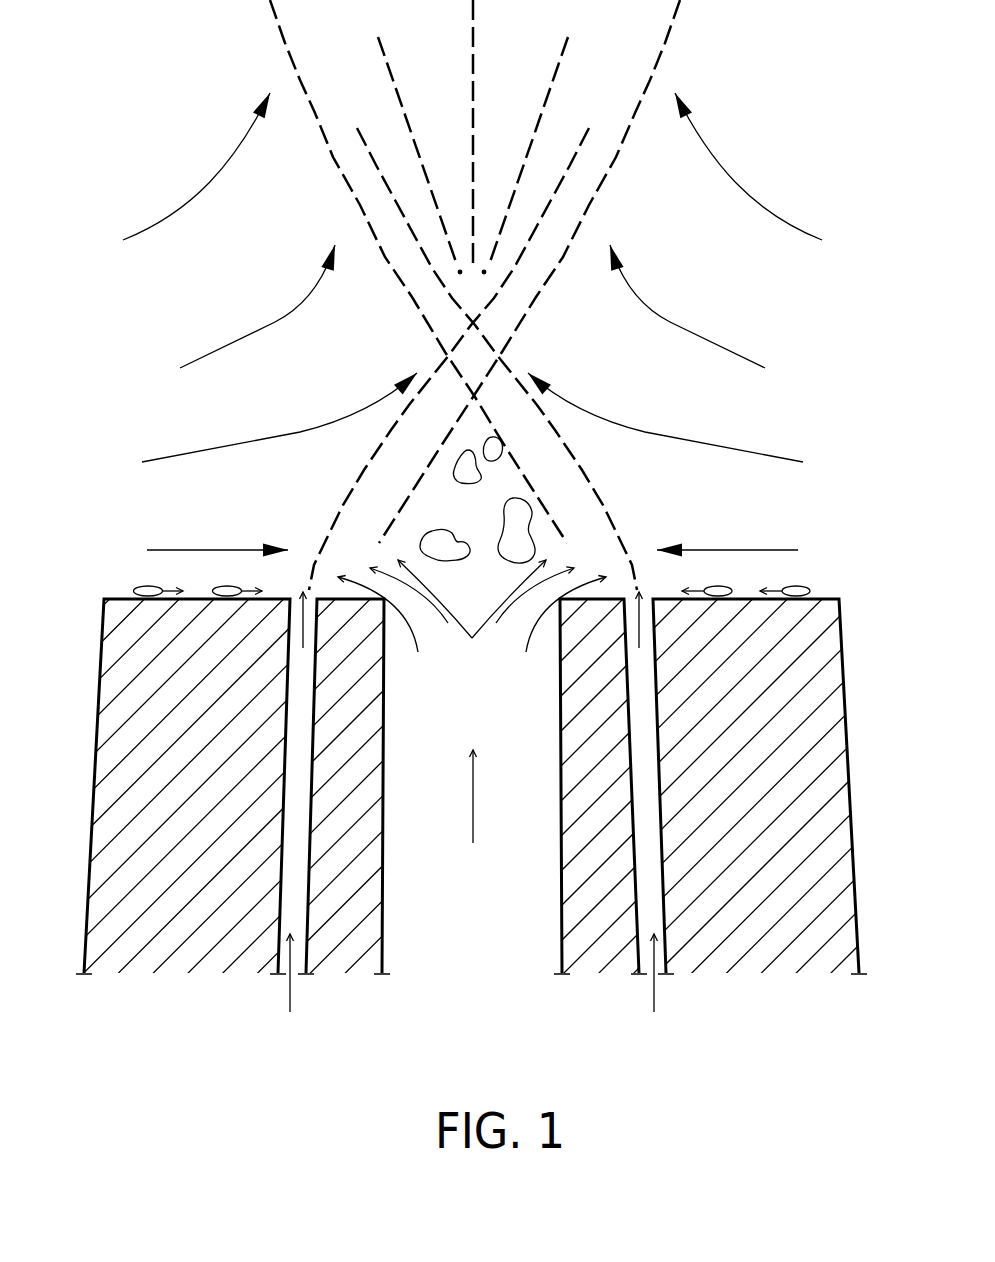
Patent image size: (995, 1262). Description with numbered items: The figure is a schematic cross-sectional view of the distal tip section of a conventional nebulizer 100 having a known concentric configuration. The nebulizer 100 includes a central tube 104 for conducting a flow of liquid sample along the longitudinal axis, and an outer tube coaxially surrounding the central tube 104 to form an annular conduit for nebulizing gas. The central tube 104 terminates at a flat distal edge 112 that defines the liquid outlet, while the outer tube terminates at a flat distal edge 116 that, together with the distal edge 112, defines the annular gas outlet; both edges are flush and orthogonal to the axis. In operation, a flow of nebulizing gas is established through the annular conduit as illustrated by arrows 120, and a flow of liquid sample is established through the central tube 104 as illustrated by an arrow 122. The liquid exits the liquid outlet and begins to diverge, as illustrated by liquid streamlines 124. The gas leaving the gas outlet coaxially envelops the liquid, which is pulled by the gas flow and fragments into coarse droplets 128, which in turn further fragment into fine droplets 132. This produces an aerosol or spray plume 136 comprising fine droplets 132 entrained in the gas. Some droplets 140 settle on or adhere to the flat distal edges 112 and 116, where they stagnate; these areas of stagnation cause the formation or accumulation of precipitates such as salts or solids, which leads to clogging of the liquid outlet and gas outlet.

The nebulizer 100 is at (108, 112).
The central tube 104 is at (558, 930).
The distal edge 112 is at (615, 598).
The distal edge 116 is at (826, 598).
The arrows 120 is at (290, 1000).
The arrow 122 is at (473, 828).
The liquid streamlines 124 is at (418, 641).
The coarse droplets 128 is at (533, 533).
The fine droplets 132 is at (453, 470).
The spray plume 136 is at (281, 43).
The droplets 140 is at (215, 587).